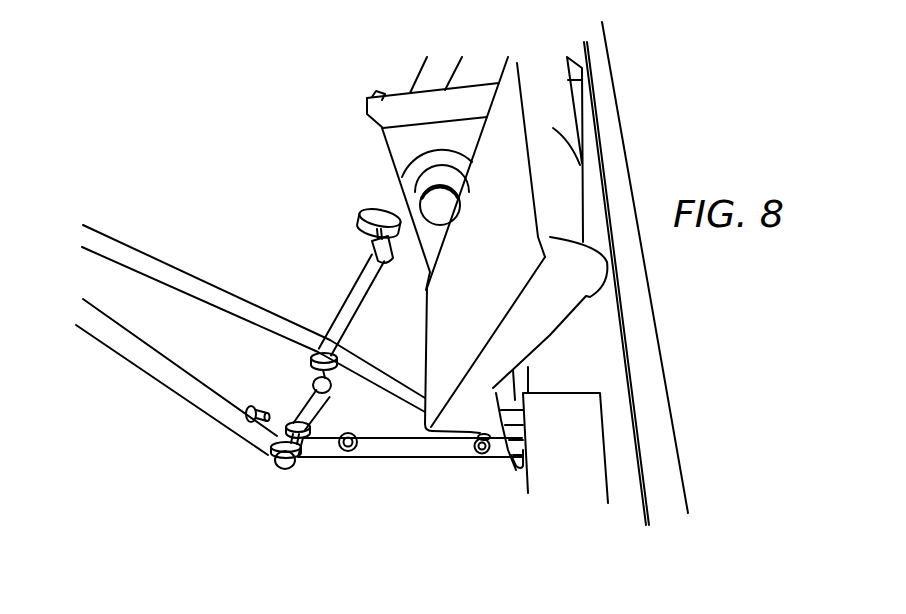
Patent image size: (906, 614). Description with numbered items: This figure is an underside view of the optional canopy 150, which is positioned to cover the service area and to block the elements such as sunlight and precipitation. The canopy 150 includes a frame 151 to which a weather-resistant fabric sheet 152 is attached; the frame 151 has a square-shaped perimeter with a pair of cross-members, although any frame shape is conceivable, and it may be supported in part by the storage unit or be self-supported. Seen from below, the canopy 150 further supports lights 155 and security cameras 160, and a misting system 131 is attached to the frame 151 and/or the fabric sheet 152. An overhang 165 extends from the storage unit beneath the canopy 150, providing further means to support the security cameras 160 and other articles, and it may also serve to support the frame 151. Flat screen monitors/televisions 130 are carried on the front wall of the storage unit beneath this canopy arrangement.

The flat screen monitors/televisions 130 is at (549, 330).
The misting system 131 is at (457, 460).
The canopy 150 is at (185, 438).
The frame 151 is at (206, 297).
The weather-resistant fabric sheet 152 is at (208, 183).
The lights 155 is at (367, 240).
The security cameras 160 is at (427, 201).
The overhang 165 is at (438, 108).